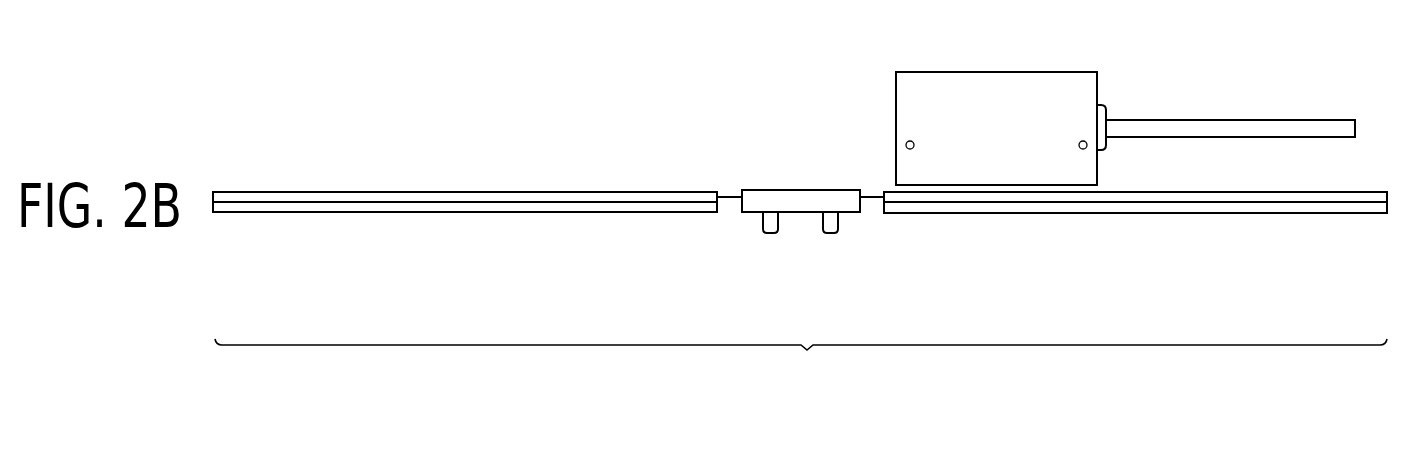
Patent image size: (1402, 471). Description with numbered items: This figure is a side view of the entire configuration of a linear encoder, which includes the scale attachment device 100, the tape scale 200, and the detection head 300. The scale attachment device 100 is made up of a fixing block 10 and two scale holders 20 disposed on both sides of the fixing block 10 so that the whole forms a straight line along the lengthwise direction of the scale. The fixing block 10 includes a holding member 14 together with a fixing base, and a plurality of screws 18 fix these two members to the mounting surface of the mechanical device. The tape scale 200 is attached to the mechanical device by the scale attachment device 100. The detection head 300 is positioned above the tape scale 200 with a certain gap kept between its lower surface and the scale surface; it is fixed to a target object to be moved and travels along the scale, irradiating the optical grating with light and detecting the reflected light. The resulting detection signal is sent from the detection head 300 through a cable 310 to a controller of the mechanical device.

The scale attachment device 100 is at (801, 362).
The scale holder 20 is at (393, 213).
The tape scale 200 is at (731, 188).
The holding member 14 is at (803, 213).
The fixing block 10 is at (805, 252).
The screw 18 is at (762, 225).
The detection head 300 is at (1013, 70).
The cable 310 is at (1258, 118).